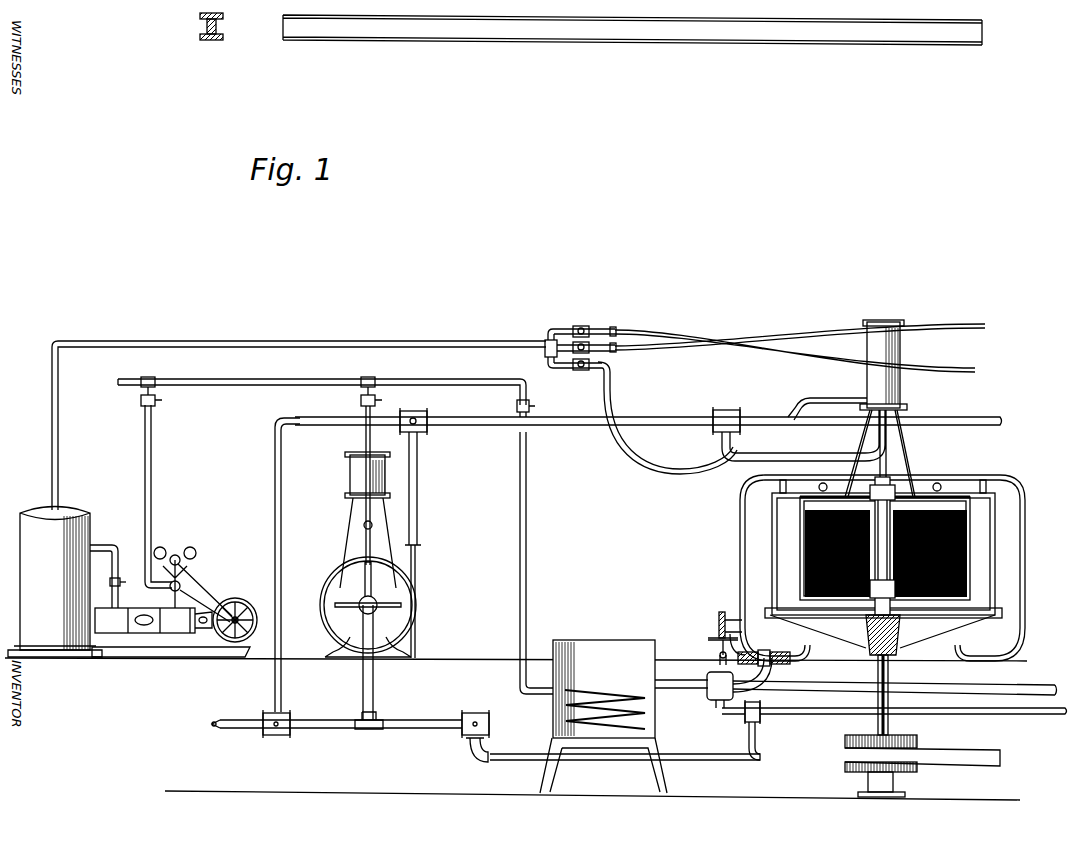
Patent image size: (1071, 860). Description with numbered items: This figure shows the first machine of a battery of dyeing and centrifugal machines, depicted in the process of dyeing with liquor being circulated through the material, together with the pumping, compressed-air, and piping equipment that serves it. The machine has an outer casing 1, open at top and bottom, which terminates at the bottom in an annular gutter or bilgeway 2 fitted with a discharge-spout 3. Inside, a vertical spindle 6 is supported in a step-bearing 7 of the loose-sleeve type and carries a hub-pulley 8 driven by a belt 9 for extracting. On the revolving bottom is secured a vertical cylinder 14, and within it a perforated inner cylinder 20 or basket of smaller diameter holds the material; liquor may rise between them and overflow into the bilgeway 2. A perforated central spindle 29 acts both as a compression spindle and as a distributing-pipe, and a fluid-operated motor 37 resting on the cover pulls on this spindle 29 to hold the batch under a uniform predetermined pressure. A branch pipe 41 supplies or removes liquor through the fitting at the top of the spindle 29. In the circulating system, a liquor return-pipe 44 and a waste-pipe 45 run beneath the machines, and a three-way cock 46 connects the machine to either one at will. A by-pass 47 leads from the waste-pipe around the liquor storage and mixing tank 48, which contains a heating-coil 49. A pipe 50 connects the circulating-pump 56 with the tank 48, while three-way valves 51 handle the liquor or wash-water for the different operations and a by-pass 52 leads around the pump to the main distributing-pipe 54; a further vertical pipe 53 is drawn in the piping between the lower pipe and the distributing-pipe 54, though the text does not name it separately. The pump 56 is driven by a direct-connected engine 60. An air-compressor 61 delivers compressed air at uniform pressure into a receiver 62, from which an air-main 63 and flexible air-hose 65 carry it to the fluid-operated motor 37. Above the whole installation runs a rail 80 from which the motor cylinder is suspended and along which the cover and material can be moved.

The outer casing 1 is at (740, 555).
The bilgeway 2 is at (754, 639).
The discharge-spout 3 is at (735, 670).
The vertical spindle 6 is at (892, 650).
The step-bearing 7 is at (895, 785).
The hub-pulley 8 is at (910, 742).
The belt 9 is at (968, 758).
The vertical cylinder 14 is at (1000, 560).
The perforated inner cylinder 20 is at (980, 520).
The spindle 29 is at (897, 497).
The fluid-operated motor 37 is at (900, 356).
The pipe 41 is at (783, 458).
The liquor return-pipe 44 is at (692, 692).
The waste-pipe 45 is at (797, 715).
The three-way cock 46 is at (715, 680).
The by-pass 47 is at (512, 762).
The liquor storage and mixing tank 48 is at (596, 645).
The heating-coil 49 is at (608, 684).
The pipe 50 is at (416, 730).
The three-way valves 51 is at (420, 412).
The by-pass 52 is at (210, 724).
The pipe 53 is at (275, 474).
The main distributing-pipe 54 is at (662, 413).
The circulating-pump 56 is at (410, 582).
The direct-connected engine 60 is at (350, 481).
The air-compressor 61 is at (165, 628).
The receiver 62 is at (38, 516).
The air-main 63 is at (293, 346).
The air-hose 65 is at (662, 340).
The rail 80 is at (198, 30).